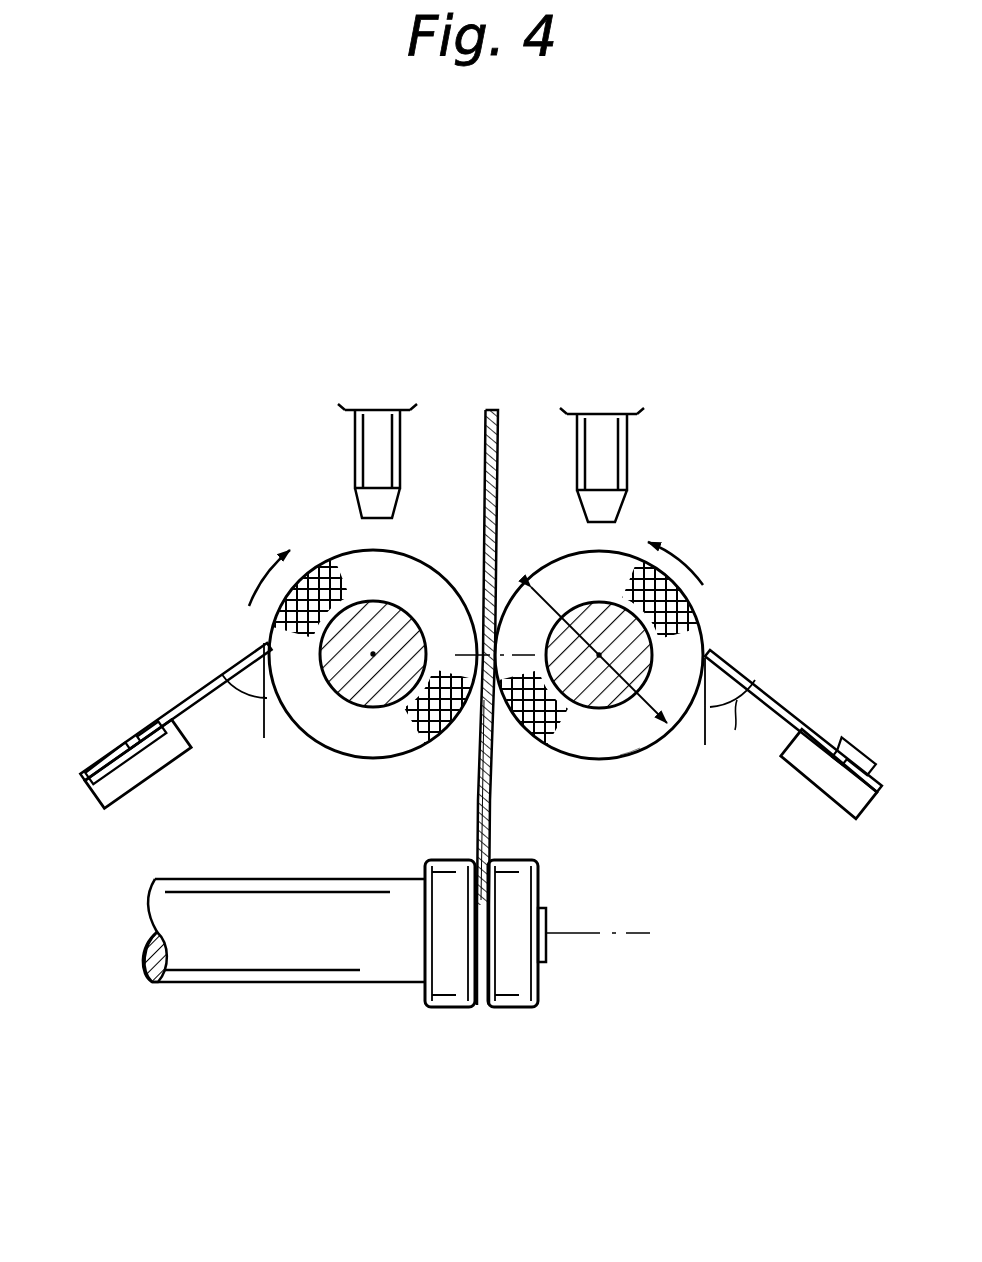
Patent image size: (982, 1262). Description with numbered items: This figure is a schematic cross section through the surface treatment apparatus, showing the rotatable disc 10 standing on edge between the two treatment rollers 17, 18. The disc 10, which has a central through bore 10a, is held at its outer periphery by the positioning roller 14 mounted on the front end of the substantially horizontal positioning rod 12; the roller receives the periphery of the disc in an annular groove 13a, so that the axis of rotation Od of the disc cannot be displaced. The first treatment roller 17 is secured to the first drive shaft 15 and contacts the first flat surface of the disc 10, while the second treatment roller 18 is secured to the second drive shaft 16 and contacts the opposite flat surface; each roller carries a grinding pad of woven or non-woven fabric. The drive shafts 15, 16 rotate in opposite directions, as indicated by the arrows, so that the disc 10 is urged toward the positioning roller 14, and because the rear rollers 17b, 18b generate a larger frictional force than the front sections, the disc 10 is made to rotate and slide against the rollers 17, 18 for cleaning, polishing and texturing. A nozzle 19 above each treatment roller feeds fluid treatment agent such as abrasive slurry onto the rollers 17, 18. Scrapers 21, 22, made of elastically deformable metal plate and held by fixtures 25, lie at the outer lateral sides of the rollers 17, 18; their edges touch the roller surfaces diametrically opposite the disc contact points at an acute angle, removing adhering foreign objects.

The rotatable disc 10 is at (502, 425).
The through bore 10a is at (496, 717).
The positioning rod 12 is at (285, 965).
The annular groove 13a is at (482, 1003).
The positioning roller 14 is at (520, 1007).
The first drive shaft 15 is at (395, 700).
The second drive shaft 16 is at (700, 618).
The first treatment roller 17 is at (336, 556).
The rear roller 17b is at (312, 730).
The second treatment roller 18 is at (610, 550).
The rear roller 18b is at (652, 737).
The nozzle 19 is at (360, 452).
The scraper 21 is at (200, 685).
The scraper 22 is at (755, 688).
The fixture 25 is at (100, 785).
The axis of rotation of the disc Od is at (472, 650).